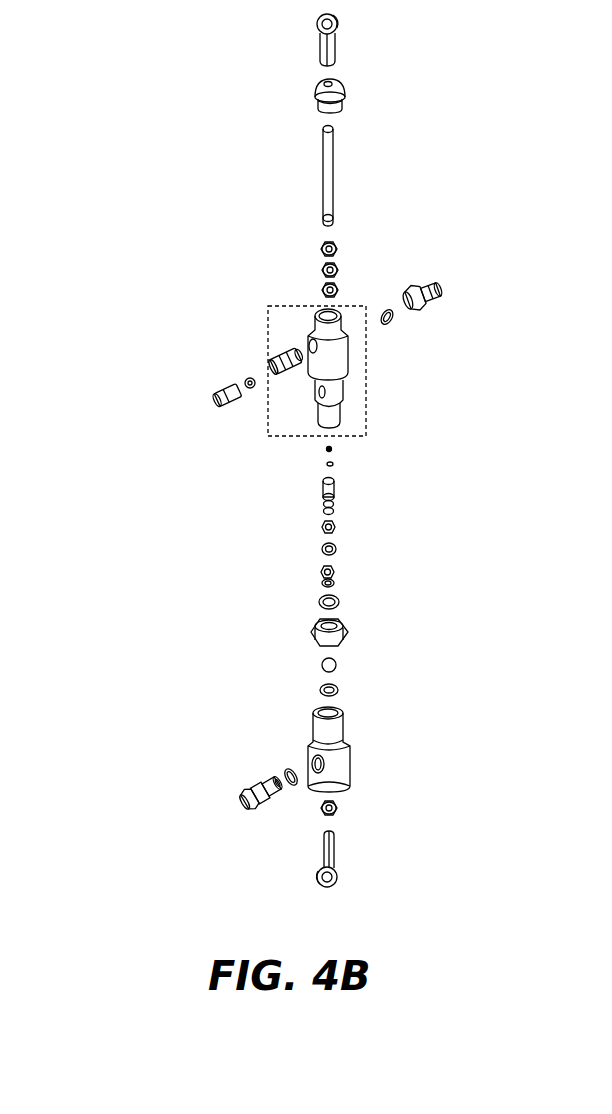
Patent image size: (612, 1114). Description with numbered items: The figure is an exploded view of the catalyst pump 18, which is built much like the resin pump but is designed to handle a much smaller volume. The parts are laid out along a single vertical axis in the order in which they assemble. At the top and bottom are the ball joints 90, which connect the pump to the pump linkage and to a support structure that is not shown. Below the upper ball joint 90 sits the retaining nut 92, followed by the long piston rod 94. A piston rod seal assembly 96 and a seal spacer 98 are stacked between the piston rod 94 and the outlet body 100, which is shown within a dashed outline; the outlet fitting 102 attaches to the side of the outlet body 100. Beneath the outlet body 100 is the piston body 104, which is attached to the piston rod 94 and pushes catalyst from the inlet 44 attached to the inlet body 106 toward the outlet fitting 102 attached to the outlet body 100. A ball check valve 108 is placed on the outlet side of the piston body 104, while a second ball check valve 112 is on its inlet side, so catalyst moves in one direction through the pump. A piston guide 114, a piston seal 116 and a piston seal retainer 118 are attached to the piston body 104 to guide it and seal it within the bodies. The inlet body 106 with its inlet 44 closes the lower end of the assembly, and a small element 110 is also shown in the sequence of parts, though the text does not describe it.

The catalyst pump 18 is at (158, 113).
The inlet 44 is at (246, 794).
The ball joints 90 is at (342, 40).
The retaining nut 92 is at (312, 91).
The piston rod 94 is at (338, 132).
The piston rod seal assembly 96 is at (322, 286).
The seal spacer 98 is at (340, 267).
The outlet body 100 is at (310, 322).
The outlet fitting 102 is at (437, 304).
The piston body 104 is at (321, 498).
The inlet body 106 is at (352, 757).
The ball check valve 108 is at (335, 463).
The ball 110 is at (326, 449).
The ball check valve 112 is at (320, 663).
The piston guide 114 is at (321, 549).
The piston seal 116 is at (337, 527).
The piston seal retainer 118 is at (322, 578).